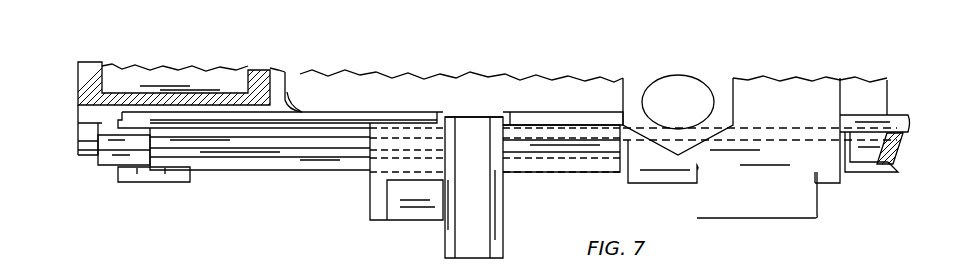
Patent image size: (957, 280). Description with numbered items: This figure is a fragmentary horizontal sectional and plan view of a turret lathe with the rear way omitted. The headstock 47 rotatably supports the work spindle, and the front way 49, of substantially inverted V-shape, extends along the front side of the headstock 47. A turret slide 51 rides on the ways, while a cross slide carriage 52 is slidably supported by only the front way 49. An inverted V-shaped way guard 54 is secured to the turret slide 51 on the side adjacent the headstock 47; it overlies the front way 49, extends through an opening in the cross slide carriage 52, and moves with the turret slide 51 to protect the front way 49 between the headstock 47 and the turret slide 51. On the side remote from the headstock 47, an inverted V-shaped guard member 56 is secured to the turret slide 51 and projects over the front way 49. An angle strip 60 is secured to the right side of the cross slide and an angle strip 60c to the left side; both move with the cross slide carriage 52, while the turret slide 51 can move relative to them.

The headstock 47 is at (203, 98).
The angle strip 60c is at (140, 117).
The angle strip 60 is at (568, 120).
The front way 49 is at (105, 158).
The way guard 54 is at (237, 162).
The cross slide carriage 52 is at (410, 165).
The turret slide 51 is at (767, 97).
The guard member 56 is at (870, 155).